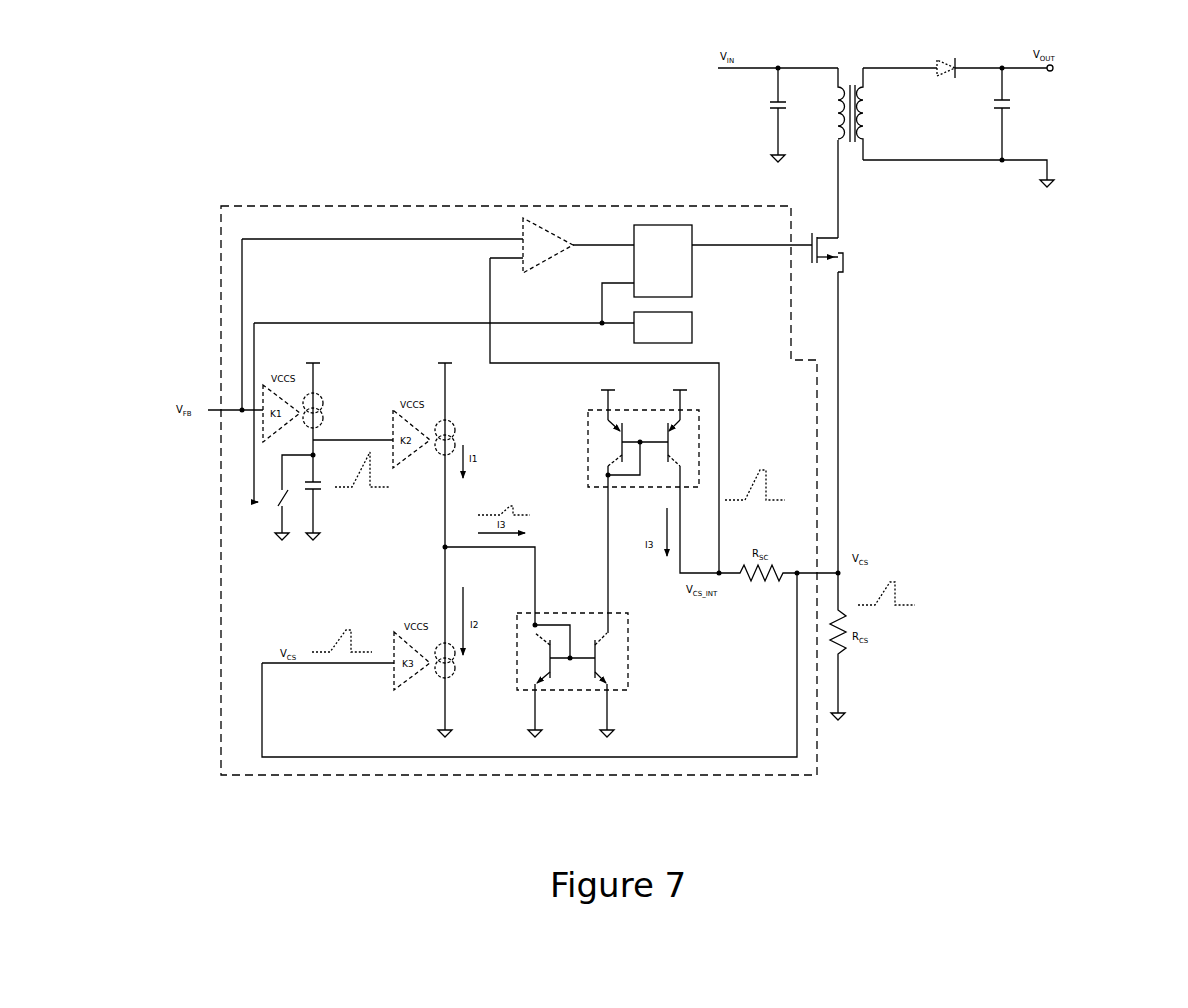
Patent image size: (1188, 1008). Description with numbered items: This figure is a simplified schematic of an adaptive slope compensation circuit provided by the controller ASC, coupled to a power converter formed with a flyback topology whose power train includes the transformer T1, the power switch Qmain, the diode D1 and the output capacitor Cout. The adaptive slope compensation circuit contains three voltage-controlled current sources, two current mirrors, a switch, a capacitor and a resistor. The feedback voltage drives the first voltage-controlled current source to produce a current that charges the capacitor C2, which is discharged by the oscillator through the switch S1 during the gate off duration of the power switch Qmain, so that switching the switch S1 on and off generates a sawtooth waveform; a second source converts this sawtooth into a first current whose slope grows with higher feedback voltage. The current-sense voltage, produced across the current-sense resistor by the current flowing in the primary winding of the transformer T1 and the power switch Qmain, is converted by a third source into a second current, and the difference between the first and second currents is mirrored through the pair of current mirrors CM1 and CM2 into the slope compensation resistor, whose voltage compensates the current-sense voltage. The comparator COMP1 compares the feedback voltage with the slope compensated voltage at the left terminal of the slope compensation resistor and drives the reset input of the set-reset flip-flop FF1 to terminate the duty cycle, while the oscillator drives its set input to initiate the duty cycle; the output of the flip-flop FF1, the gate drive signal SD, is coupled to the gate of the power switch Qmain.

The comparator COMP1 is at (550, 223).
The set-reset flip-flop FF1 is at (672, 218).
The switch drive signal SD is at (780, 255).
The current mirror CM2 is at (703, 412).
The controller ASC is at (820, 502).
The switch S1 is at (262, 515).
The capacitor C2 is at (320, 493).
The current mirror CM1 is at (630, 659).
The transformer T1 is at (858, 165).
The diode D1 is at (945, 88).
The power switch Qmain is at (858, 285).
The output capacitor Cout is at (1012, 108).